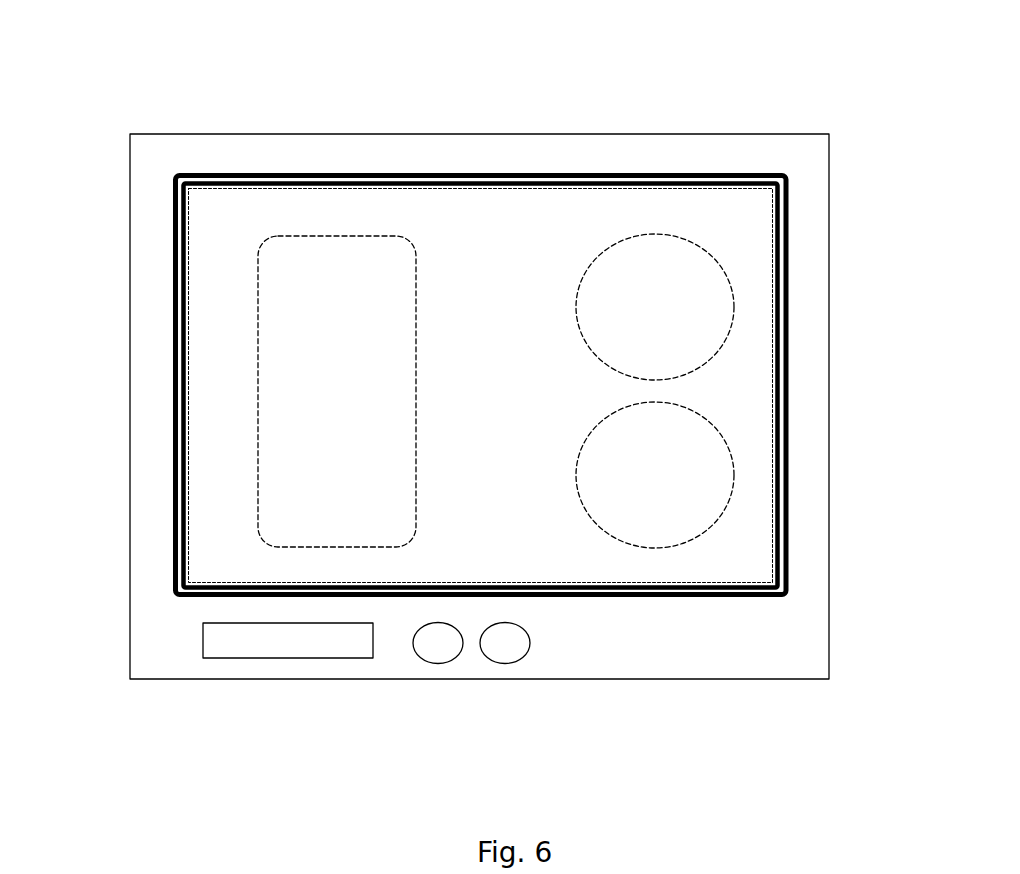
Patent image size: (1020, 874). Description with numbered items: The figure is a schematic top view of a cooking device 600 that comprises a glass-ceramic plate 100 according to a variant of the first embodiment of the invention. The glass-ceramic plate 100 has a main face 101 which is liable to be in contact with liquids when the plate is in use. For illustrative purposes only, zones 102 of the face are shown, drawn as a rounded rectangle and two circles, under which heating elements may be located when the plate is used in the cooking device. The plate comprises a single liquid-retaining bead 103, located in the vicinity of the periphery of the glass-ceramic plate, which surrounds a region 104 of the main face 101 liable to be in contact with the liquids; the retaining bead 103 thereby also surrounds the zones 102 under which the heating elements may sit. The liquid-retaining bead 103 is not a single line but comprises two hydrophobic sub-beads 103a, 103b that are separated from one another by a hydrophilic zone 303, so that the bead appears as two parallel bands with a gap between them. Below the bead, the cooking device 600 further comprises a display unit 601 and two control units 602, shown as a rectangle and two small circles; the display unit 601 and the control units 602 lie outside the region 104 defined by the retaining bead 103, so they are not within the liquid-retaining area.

The cooking device 600 is at (158, 104).
The glass-ceramic plate 100 is at (296, 134).
The main face 101 is at (654, 157).
The zones 102 is at (258, 391).
The liquid-retaining bead 103 is at (766, 602).
The hydrophobic sub-bead 103a is at (690, 597).
The hydrophobic sub-bead 103b is at (554, 590).
The hydrophilic zone 303 is at (632, 590).
The region 104 is at (505, 208).
The display unit 601 is at (287, 658).
The control unit 602 is at (436, 663).